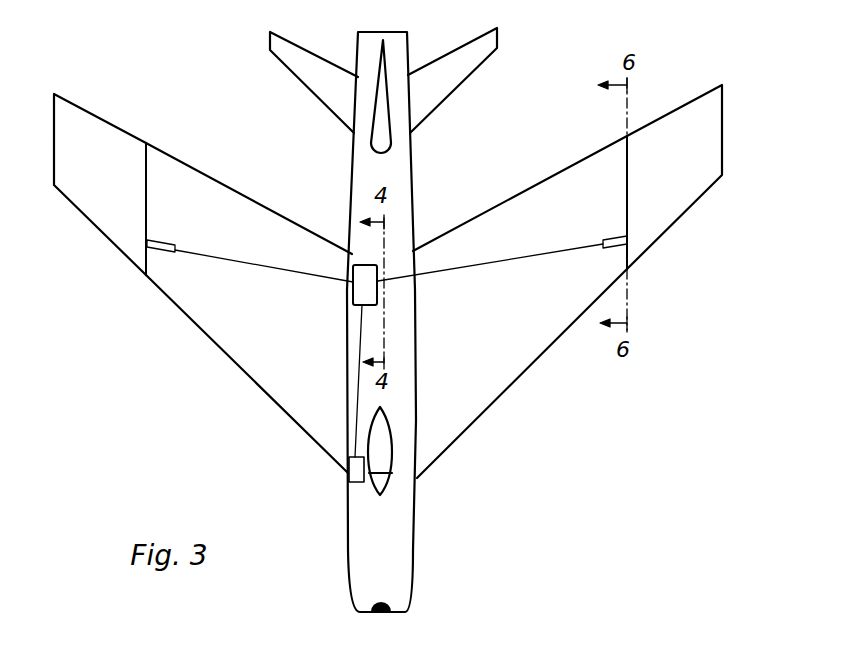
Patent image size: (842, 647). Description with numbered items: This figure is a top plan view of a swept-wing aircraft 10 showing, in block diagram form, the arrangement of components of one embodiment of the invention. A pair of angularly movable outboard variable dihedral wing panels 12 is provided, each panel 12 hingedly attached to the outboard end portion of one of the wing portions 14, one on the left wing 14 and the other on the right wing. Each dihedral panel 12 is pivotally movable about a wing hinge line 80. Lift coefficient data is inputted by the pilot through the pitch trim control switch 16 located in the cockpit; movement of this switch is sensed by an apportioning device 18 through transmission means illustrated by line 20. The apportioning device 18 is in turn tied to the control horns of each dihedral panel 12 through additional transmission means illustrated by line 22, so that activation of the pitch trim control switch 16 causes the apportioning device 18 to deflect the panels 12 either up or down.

The swept-wing aircraft 10 is at (181, 464).
The outboard variable dihedral wing panel 12 is at (107, 217).
The wing portion 14 is at (252, 344).
The pitch trim control switch 16 is at (350, 468).
The apportioning device 18 is at (363, 281).
The transmission means 20 is at (358, 388).
The transmission means 22 is at (232, 262).
The wing hinge line 80 is at (148, 180).